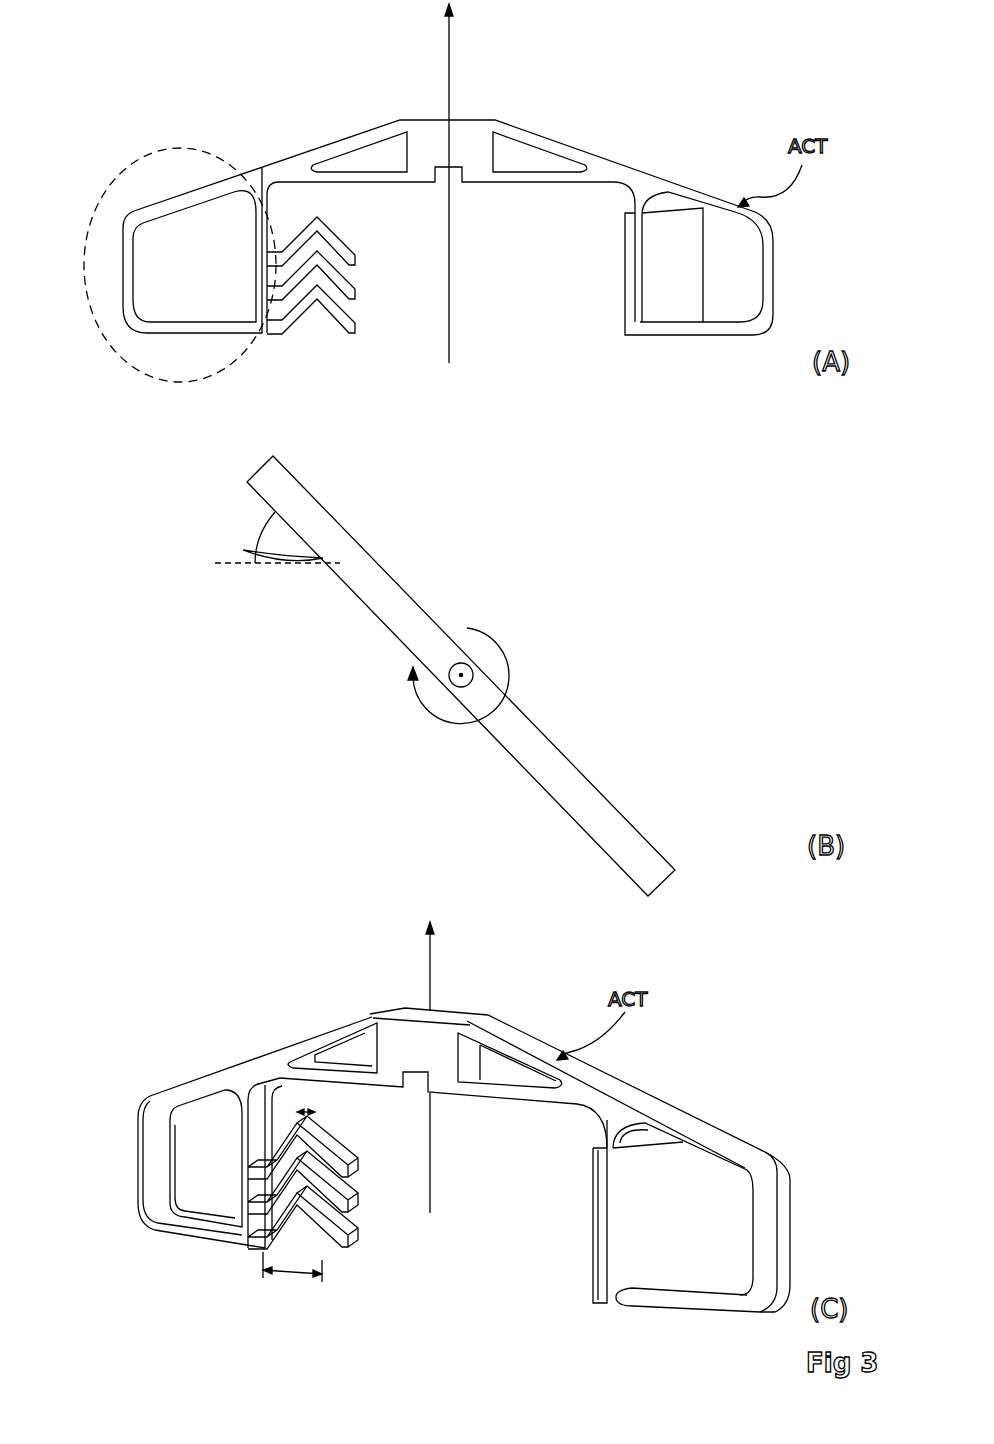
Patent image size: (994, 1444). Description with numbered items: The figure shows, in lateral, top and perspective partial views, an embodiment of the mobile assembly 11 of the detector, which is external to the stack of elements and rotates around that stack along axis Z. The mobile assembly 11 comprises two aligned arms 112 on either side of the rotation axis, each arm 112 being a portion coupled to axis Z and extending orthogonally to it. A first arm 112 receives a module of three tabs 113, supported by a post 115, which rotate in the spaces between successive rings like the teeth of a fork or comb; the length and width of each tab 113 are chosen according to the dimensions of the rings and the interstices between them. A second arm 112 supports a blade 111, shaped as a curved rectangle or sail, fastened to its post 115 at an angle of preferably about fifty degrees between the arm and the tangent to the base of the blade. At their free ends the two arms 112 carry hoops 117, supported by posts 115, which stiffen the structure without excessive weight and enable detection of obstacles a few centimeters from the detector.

The mobile assembly 11 is at (787, 88).
The blade 111 is at (708, 272).
The arm 112 is at (332, 140).
The tab 113 is at (340, 338).
The post 115 is at (650, 167).
The hoop 117 is at (160, 150).